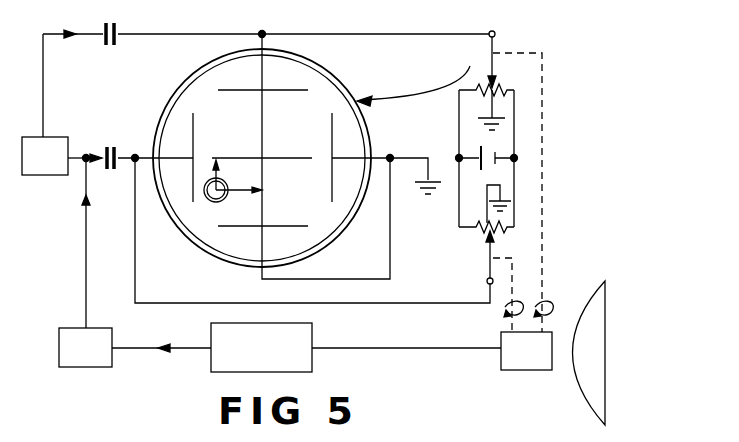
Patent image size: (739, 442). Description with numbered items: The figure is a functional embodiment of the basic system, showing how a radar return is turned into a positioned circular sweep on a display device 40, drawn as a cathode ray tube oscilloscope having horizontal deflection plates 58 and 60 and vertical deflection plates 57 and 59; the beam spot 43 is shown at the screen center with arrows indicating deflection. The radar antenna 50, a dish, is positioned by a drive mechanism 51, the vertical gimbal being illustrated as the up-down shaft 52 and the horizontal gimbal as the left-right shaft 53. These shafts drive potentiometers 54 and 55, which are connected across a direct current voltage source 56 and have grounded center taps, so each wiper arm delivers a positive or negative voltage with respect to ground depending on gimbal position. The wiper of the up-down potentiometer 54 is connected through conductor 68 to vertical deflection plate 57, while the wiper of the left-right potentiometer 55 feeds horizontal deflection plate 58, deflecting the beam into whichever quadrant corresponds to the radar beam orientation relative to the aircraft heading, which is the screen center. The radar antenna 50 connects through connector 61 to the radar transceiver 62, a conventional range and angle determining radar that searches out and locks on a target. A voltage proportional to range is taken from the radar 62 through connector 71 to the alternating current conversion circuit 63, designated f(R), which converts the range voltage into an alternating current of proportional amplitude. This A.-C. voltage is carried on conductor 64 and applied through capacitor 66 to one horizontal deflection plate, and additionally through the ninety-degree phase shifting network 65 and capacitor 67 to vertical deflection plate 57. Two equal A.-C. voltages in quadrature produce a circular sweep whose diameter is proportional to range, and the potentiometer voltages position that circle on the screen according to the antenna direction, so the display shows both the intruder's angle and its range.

The display device 40 is at (206, 78).
The spot (dot) on oscilloscope screen 43 is at (212, 201).
The radar antenna 50 is at (562, 385).
The drive mechanism 51 is at (540, 370).
The shaft 52 is at (542, 322).
The shaft 53 is at (508, 307).
The up-down potentiometer 54 is at (500, 90).
The left-right potentiometer 55 is at (477, 232).
The direct current voltage source 56 is at (478, 150).
The vertical deflection plate 57 is at (268, 92).
The horizontal deflection plate 58 is at (193, 150).
The vertical deflection plate 59 is at (268, 226).
The horizontal deflection plate 60 is at (332, 190).
The connector 61 is at (395, 348).
The radar transceiver 62 is at (312, 325).
The alternating current conversion circuit 63 is at (72, 367).
The conductor 64 is at (86, 272).
The 90° phase shifting network 65 is at (30, 175).
The capacitor 66 is at (105, 170).
The capacitor 67 is at (118, 24).
The conductor 68 is at (386, 34).
The connector 71 is at (205, 348).